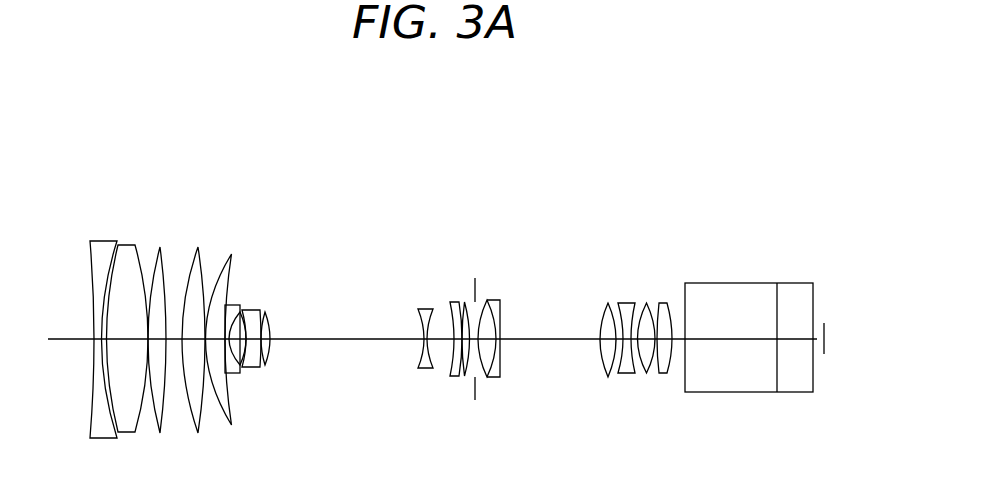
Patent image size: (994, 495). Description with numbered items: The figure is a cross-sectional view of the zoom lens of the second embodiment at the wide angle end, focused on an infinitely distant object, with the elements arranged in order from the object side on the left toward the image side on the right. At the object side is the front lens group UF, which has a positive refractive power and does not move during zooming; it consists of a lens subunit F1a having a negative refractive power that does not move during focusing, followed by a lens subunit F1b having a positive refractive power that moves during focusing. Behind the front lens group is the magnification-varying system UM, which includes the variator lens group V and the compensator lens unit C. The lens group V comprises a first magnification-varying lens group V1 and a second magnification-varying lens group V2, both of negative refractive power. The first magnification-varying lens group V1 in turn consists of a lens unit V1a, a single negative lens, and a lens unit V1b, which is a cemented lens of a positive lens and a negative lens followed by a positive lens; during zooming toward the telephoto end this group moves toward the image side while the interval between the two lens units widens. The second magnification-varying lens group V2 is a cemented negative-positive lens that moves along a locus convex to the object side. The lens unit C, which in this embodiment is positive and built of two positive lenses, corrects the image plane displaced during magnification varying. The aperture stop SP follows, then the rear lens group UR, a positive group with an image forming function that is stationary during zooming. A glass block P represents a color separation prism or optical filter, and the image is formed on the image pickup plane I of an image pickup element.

The front lens group UF is at (240, 118).
The lens subunit F1a is at (168, 231).
The lens subunit F1b is at (235, 231).
The magnification-varying system UM is at (473, 118).
The lens group (variator) V is at (438, 167).
The first magnification-varying lens group V1 is at (343, 209).
The lens unit V1a is at (234, 302).
The lens unit V1b is at (243, 301).
The second magnification-varying lens group V2 is at (437, 294).
The lens unit (compensator) C is at (470, 289).
The aperture stop SP is at (475, 278).
The rear lens group UR is at (678, 286).
The color separation prism, optical filter, etc. P is at (813, 275).
The image pickup plane I is at (828, 377).